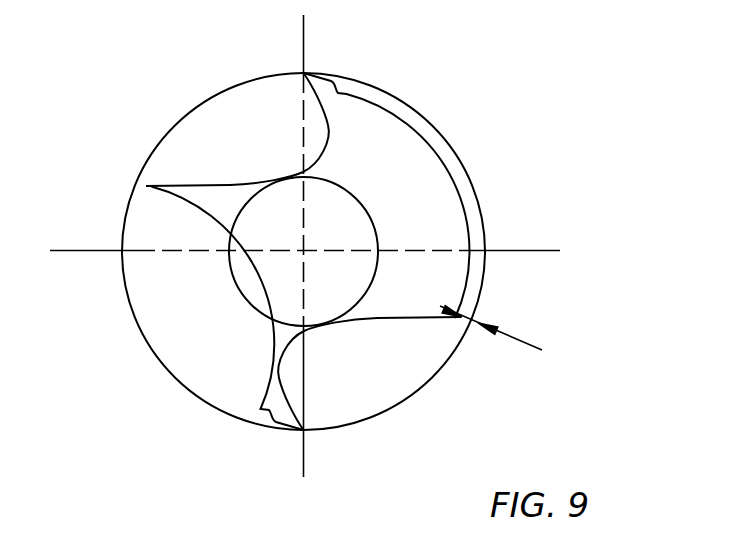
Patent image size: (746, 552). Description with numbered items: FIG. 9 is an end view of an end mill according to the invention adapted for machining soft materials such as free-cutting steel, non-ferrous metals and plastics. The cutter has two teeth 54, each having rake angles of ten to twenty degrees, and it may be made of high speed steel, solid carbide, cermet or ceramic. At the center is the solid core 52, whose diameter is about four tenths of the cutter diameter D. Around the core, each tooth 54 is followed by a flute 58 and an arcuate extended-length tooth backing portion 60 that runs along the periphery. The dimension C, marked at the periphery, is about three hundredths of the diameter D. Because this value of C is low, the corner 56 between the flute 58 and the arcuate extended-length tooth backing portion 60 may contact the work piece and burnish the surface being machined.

The solid core 52 is at (362, 297).
The teeth 54 is at (322, 88).
The corner 56 is at (149, 185).
The flute 58 is at (271, 130).
The arcuate extended-length tooth backing portion 60 is at (170, 342).
The diameter D is at (198, 104).
The C value C is at (491, 328).